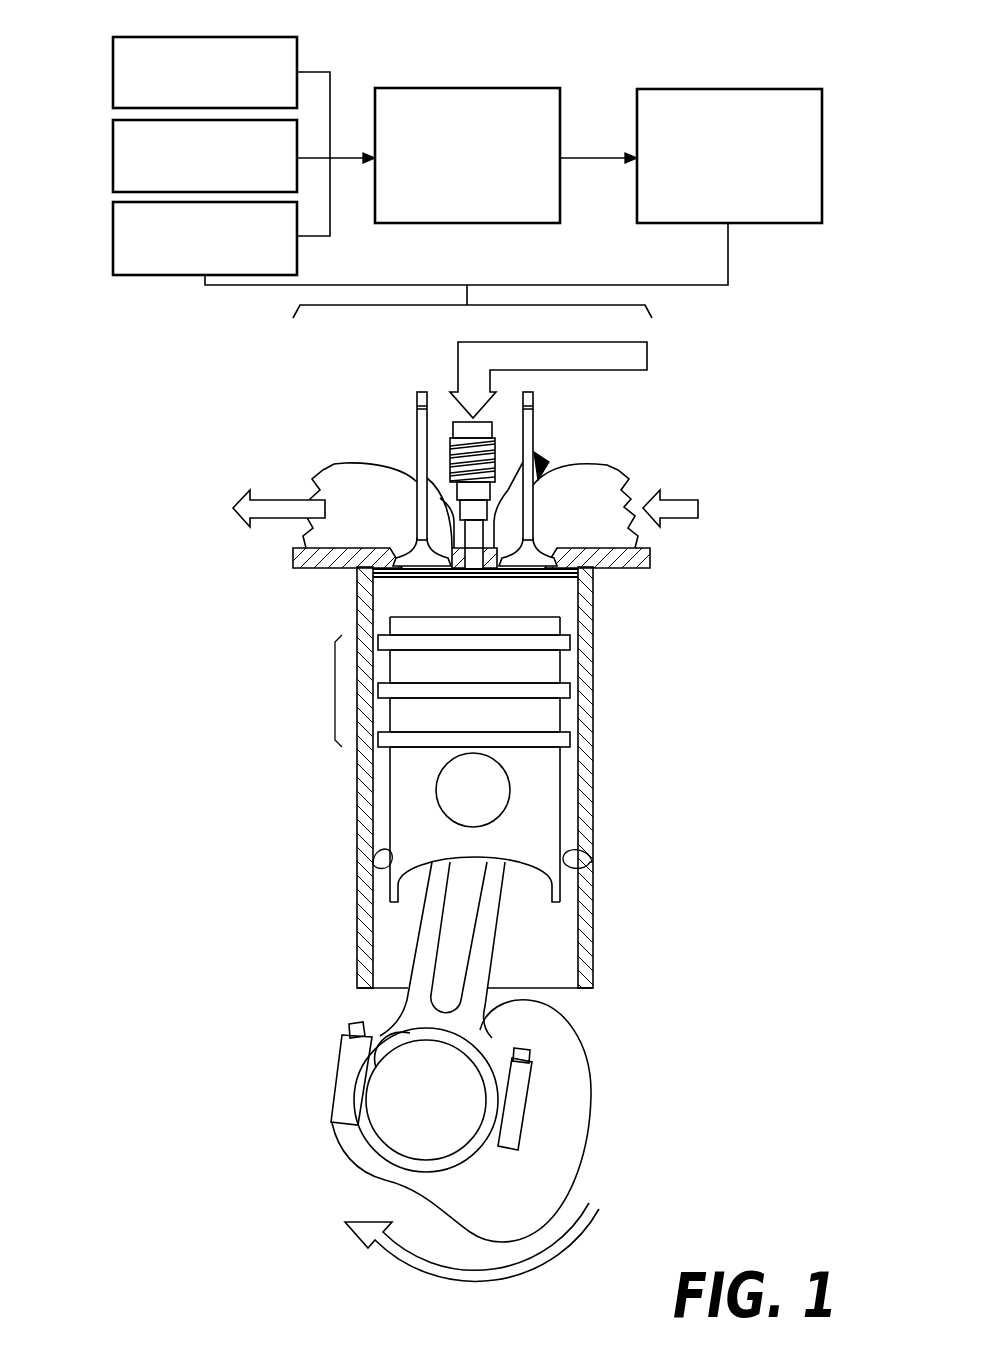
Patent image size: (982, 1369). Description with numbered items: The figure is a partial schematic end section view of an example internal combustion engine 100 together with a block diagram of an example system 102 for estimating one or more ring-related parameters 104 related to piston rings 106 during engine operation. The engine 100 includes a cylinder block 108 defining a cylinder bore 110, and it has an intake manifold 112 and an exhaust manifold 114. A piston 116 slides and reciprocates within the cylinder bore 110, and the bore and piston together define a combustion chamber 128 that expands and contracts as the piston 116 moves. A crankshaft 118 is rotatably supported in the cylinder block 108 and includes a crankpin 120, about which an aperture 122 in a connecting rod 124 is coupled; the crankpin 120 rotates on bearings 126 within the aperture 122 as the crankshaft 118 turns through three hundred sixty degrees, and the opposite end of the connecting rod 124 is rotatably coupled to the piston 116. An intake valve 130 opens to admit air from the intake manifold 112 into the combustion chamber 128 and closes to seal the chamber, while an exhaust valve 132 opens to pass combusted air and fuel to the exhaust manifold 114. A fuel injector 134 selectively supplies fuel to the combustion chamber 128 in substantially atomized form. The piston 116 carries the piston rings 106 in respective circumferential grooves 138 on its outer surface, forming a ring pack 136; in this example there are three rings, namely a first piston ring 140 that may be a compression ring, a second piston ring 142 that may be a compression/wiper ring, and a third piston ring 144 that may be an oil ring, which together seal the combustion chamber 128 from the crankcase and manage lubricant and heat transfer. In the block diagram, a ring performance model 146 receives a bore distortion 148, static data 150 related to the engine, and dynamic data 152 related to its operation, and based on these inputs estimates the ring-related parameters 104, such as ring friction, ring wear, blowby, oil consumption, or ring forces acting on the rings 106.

The internal combustion engine 100 is at (332, 348).
The system 102 is at (98, 22).
The ring-related parameters 104 is at (714, 194).
The piston rings 106 is at (560, 684).
The cylinder block 108 is at (585, 946).
The cylinder bore 110 is at (376, 868).
The intake manifold 112 is at (620, 532).
The exhaust manifold 114 is at (373, 486).
The piston 116 is at (505, 740).
The crankshaft 118 is at (573, 1063).
The crankpin 120 is at (455, 1140).
The aperture 122 is at (390, 1064).
The connecting rod 124 is at (474, 978).
The bearings 126 is at (382, 1152).
The combustion chamber 128 is at (488, 606).
The intake valve 130 is at (535, 397).
The exhaust valve 132 is at (420, 392).
The fuel injector 134 is at (466, 420).
The ring pack 136 is at (335, 692).
The circumferential grooves 138 is at (445, 652).
The first piston ring 140 is at (570, 642).
The second piston ring 142 is at (570, 690).
The third piston ring 144 is at (570, 740).
The ring performance model 146 is at (452, 206).
The bore distortion 148 is at (190, 99).
The static data 150 is at (190, 182).
The dynamic data 152 is at (190, 264).